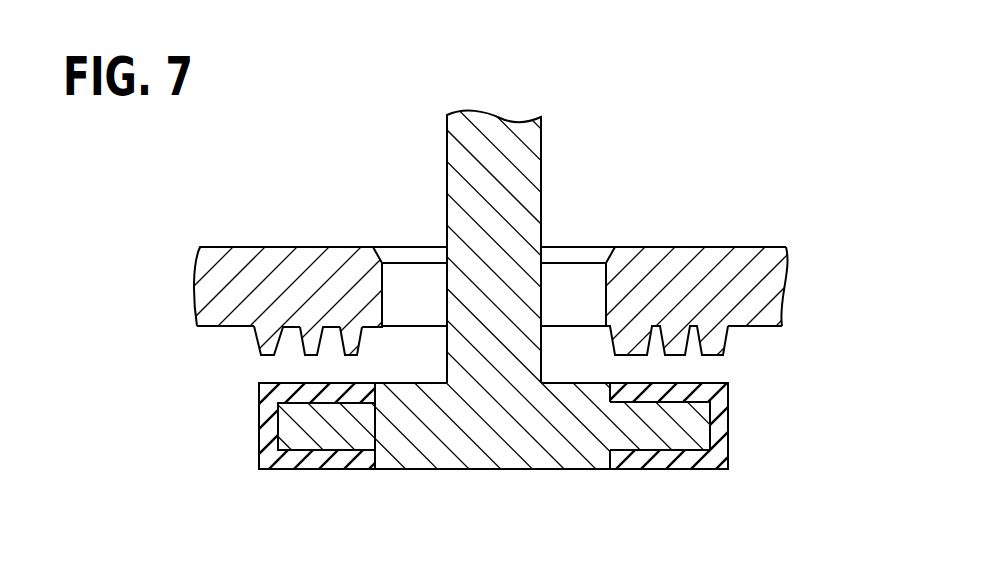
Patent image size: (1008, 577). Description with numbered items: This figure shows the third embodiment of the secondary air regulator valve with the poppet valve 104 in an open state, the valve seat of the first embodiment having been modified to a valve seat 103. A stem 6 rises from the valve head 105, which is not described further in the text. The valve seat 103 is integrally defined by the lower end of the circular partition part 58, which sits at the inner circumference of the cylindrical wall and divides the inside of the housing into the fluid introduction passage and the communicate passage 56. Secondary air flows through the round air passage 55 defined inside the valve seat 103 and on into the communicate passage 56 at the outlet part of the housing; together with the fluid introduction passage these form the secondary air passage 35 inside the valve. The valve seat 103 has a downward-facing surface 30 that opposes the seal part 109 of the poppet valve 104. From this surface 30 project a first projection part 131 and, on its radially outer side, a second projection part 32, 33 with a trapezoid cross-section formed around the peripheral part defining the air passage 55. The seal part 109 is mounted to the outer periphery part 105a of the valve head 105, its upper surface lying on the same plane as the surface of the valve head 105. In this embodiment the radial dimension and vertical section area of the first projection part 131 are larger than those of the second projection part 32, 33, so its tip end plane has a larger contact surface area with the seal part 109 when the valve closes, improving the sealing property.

The shaft 6 is at (458, 161).
The surface of the valve seat 30 is at (783, 338).
The second projection part 32 is at (308, 353).
The second projection part 33 is at (266, 356).
The secondary air passage 35 is at (565, 167).
The air passage 55 is at (573, 273).
The communicate passage 56 is at (767, 443).
The partition part 58 is at (745, 273).
The valve seat 103 is at (759, 348).
The poppet valve 104 is at (486, 293).
The valve head 105 is at (486, 293).
The outer periphery part 105a is at (290, 428).
The seal part 109 is at (318, 460).
The first projection part 131 is at (355, 345).